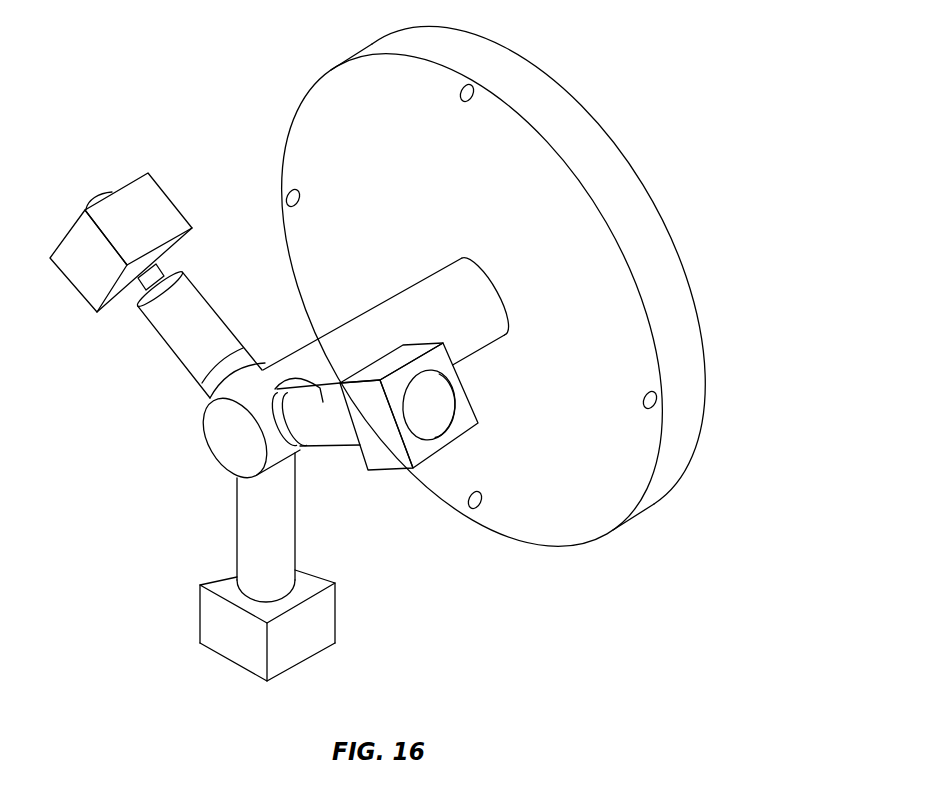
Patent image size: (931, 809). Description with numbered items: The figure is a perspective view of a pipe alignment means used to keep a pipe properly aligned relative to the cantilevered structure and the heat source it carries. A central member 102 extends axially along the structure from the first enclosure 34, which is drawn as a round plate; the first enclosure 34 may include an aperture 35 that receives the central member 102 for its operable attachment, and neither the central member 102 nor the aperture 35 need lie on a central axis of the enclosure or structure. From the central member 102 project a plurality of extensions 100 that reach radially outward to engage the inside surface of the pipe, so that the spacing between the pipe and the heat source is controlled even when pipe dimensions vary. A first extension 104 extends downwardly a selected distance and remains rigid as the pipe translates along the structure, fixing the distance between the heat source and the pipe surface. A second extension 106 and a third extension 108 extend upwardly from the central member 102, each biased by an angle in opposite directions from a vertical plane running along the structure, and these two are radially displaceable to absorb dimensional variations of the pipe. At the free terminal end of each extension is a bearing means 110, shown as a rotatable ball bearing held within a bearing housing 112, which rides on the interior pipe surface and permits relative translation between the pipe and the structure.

The first enclosure 34 is at (687, 432).
The aperture 35 is at (492, 287).
The central member 102 is at (295, 351).
The extensions 100 is at (244, 427).
The first extension 104 is at (335, 612).
The second extension 106 is at (69, 288).
The third extension 108 is at (393, 470).
The bearing means 110 is at (90, 206).
The bearing housing 112 is at (173, 195).